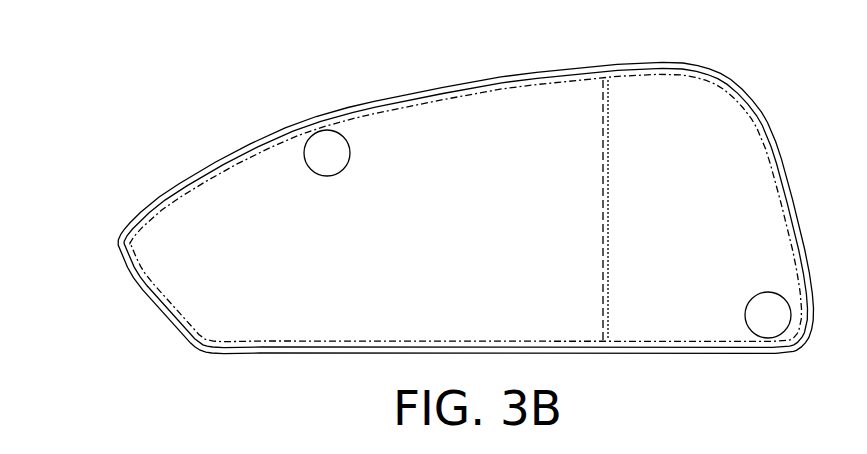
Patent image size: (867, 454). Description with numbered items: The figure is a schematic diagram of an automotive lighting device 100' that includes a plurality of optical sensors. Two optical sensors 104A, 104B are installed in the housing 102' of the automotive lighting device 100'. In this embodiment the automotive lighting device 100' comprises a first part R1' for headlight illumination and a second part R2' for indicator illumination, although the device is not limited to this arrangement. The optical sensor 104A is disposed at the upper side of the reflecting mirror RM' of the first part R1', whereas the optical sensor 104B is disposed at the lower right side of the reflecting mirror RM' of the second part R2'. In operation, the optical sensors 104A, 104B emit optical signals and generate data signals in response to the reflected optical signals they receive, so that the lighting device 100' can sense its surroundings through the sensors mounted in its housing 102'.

The automotive lighting device 100' is at (56, 34).
The housing 102' is at (465, 207).
The optical sensor 104A is at (350, 153).
The optical sensor 104B is at (745, 314).
The reflecting mirror RM' is at (643, 186).
The first part R1' is at (512, 59).
The second part R2' is at (586, 75).